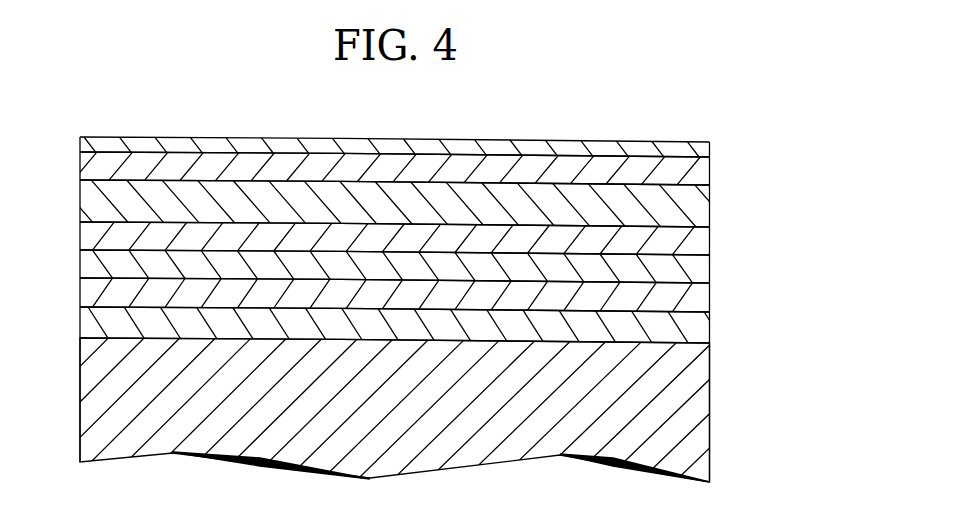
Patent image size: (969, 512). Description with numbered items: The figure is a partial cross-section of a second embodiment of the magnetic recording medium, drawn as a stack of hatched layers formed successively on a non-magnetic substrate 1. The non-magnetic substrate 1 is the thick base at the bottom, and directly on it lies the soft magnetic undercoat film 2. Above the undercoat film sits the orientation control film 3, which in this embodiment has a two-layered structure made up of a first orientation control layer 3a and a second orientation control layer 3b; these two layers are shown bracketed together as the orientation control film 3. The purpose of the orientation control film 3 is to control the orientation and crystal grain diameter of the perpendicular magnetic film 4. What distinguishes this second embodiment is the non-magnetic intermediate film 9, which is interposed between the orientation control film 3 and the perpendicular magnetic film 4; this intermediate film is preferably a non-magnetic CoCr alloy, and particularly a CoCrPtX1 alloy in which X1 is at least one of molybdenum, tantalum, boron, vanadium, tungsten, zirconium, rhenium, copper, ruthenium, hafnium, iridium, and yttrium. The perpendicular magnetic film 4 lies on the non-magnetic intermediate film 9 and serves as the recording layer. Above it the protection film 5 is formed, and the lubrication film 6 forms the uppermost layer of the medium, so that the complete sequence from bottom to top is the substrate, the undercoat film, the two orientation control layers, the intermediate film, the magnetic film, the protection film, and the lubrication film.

The non-magnetic substrate 1 is at (710, 399).
The soft magnetic undercoat film 2 is at (710, 330).
The orientation control film 3 is at (480, 288).
The first orientation control layer 3a is at (710, 302).
The second orientation control layer 3b is at (710, 272).
The non-magnetic intermediate film 9 is at (710, 238).
The perpendicular magnetic film 4 is at (710, 203).
The protection film 5 is at (710, 164).
The lubrication film 6 is at (710, 142).